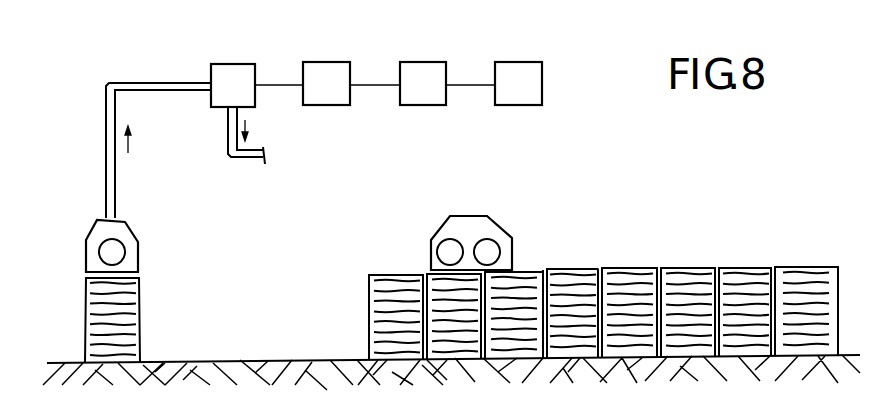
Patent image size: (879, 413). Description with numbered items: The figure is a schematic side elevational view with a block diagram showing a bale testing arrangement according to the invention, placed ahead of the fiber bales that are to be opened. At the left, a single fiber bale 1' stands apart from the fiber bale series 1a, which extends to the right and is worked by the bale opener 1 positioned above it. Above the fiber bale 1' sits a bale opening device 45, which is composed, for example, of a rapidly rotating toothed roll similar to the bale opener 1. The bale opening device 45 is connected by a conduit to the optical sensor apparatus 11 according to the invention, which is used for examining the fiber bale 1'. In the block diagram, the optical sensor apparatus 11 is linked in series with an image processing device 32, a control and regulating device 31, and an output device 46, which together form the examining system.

The optical sensor apparatus 11 is at (225, 80).
The image processing device 32 is at (320, 82).
The control and regulating device 31 is at (422, 75).
The output device 46 is at (518, 72).
The bale opening device 45 is at (100, 232).
The fiber bale 1' is at (145, 320).
The bale opener 1 is at (488, 231).
The fiber bale series 1a is at (780, 267).